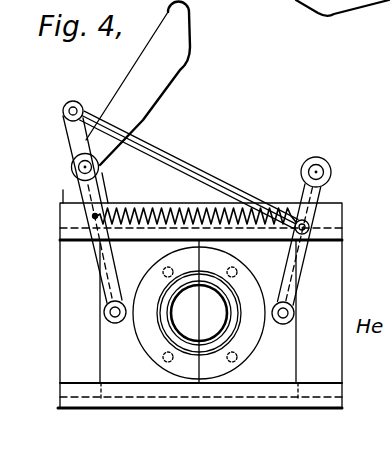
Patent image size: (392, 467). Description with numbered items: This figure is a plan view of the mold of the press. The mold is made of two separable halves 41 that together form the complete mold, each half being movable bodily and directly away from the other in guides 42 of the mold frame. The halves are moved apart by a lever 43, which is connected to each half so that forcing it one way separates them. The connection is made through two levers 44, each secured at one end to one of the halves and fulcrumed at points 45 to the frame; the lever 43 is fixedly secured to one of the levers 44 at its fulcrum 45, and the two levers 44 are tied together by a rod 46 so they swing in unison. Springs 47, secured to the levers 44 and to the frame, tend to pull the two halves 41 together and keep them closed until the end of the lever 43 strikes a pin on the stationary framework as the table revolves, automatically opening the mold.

The mold half 41 is at (199, 313).
The guide 42 is at (336, 236).
The lever 43 is at (168, 85).
The lever 44 is at (83, 195).
The fulcrum 45 is at (84, 167).
The rod 46 is at (189, 168).
The spring 47 is at (143, 208).